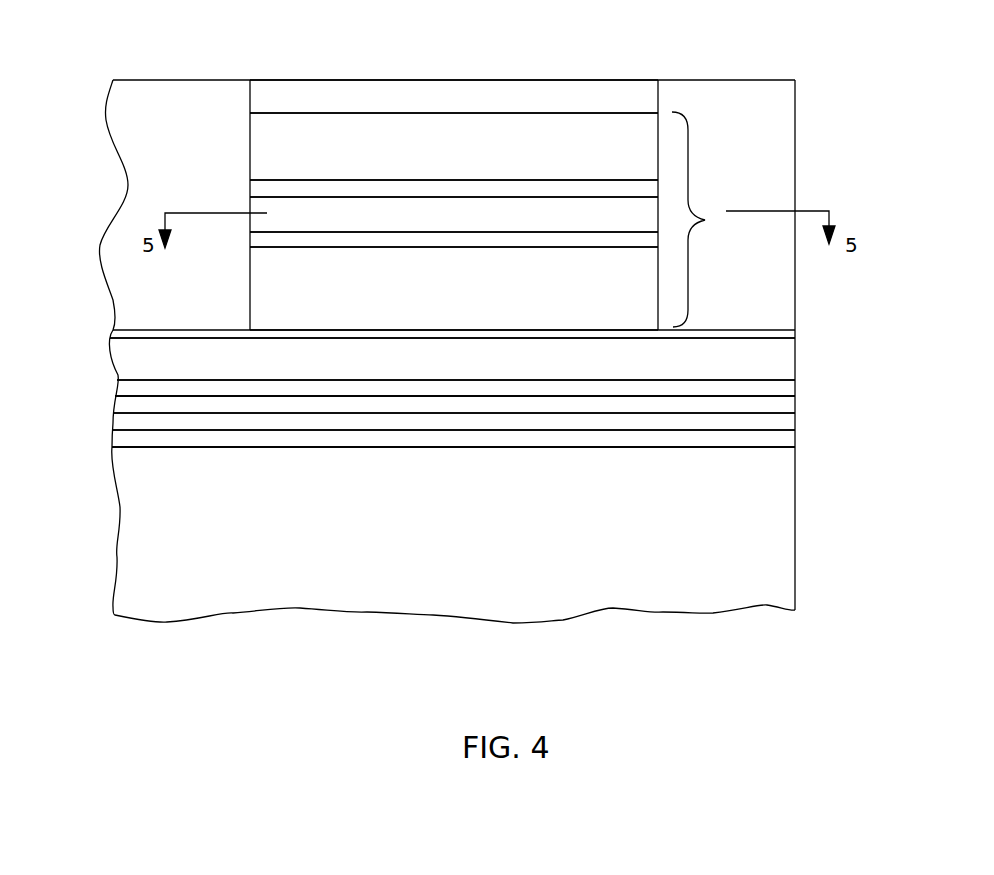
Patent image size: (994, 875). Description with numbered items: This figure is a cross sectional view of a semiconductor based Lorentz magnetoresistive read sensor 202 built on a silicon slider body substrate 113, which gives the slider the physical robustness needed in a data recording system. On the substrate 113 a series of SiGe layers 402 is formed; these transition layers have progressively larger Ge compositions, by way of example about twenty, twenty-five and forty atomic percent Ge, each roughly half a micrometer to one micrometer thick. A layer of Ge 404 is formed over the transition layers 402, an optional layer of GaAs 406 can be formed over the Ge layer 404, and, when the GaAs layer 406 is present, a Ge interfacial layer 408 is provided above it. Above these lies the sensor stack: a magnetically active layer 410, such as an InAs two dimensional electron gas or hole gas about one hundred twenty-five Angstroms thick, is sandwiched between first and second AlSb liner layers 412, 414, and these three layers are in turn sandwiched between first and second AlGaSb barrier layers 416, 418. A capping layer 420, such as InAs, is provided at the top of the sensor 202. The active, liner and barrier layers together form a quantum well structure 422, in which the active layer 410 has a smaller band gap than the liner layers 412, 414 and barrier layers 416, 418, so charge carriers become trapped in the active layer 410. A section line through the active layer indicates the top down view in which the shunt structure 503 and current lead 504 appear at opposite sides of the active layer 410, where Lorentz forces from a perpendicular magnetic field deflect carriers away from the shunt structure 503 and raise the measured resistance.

The semiconductor based read sensor 202 is at (435, 62).
The shunt structure 503 is at (692, 108).
The first current lead I1 504 is at (165, 182).
The quantum well structure 422 is at (688, 128).
The capping layer 420 is at (471, 98).
The second barrier layer 418 is at (471, 146).
The second liner layer 414 is at (545, 188).
The magnetically active layer 410 is at (486, 216).
The first liner layer 412 is at (556, 238).
The first barrier layer 416 is at (488, 289).
The Ge interfacial layer 408 is at (120, 334).
The GaAs layer 406 is at (494, 359).
The Ge layer 404 is at (126, 391).
The series of SiGe layers 402 is at (803, 445).
The slider body substrate 113 is at (499, 519).